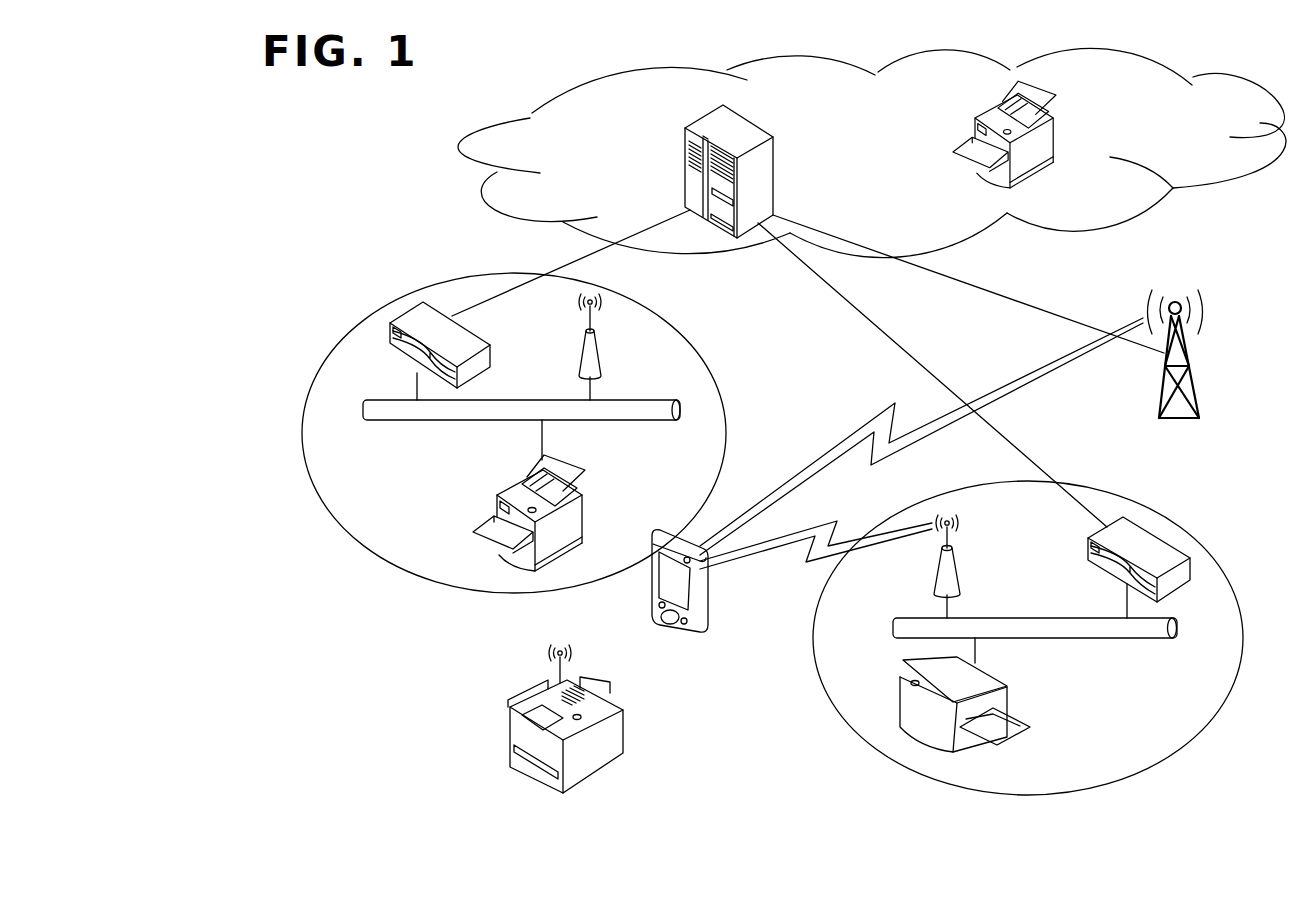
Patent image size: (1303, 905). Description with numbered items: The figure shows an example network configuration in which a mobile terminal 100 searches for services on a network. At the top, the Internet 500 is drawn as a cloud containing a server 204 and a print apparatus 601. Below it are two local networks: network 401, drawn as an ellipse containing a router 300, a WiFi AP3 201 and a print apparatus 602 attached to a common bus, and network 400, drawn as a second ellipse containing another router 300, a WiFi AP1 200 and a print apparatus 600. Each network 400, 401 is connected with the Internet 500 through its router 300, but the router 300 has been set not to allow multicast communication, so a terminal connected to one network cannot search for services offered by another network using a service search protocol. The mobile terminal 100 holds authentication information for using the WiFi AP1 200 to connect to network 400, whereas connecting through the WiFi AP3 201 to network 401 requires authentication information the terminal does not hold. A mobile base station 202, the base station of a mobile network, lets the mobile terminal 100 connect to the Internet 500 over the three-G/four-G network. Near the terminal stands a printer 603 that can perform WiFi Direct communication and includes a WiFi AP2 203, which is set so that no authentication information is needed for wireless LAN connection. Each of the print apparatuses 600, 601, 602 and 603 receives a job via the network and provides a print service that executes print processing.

The mobile terminal 100 is at (651, 598).
The WiFi AP1 200 is at (962, 522).
The WiFi AP3 201 is at (603, 355).
The mobile base station 202 is at (1197, 360).
The WiFi AP2 203 is at (548, 655).
The server 204 is at (783, 107).
The router 300 is at (492, 347).
The network 400 is at (1168, 517).
The network 401 is at (706, 372).
The Internet 500 is at (458, 148).
The print apparatus 600 is at (1007, 697).
The print apparatus 601 is at (1060, 130).
The print apparatus 602 is at (500, 494).
The printer 603 is at (623, 733).